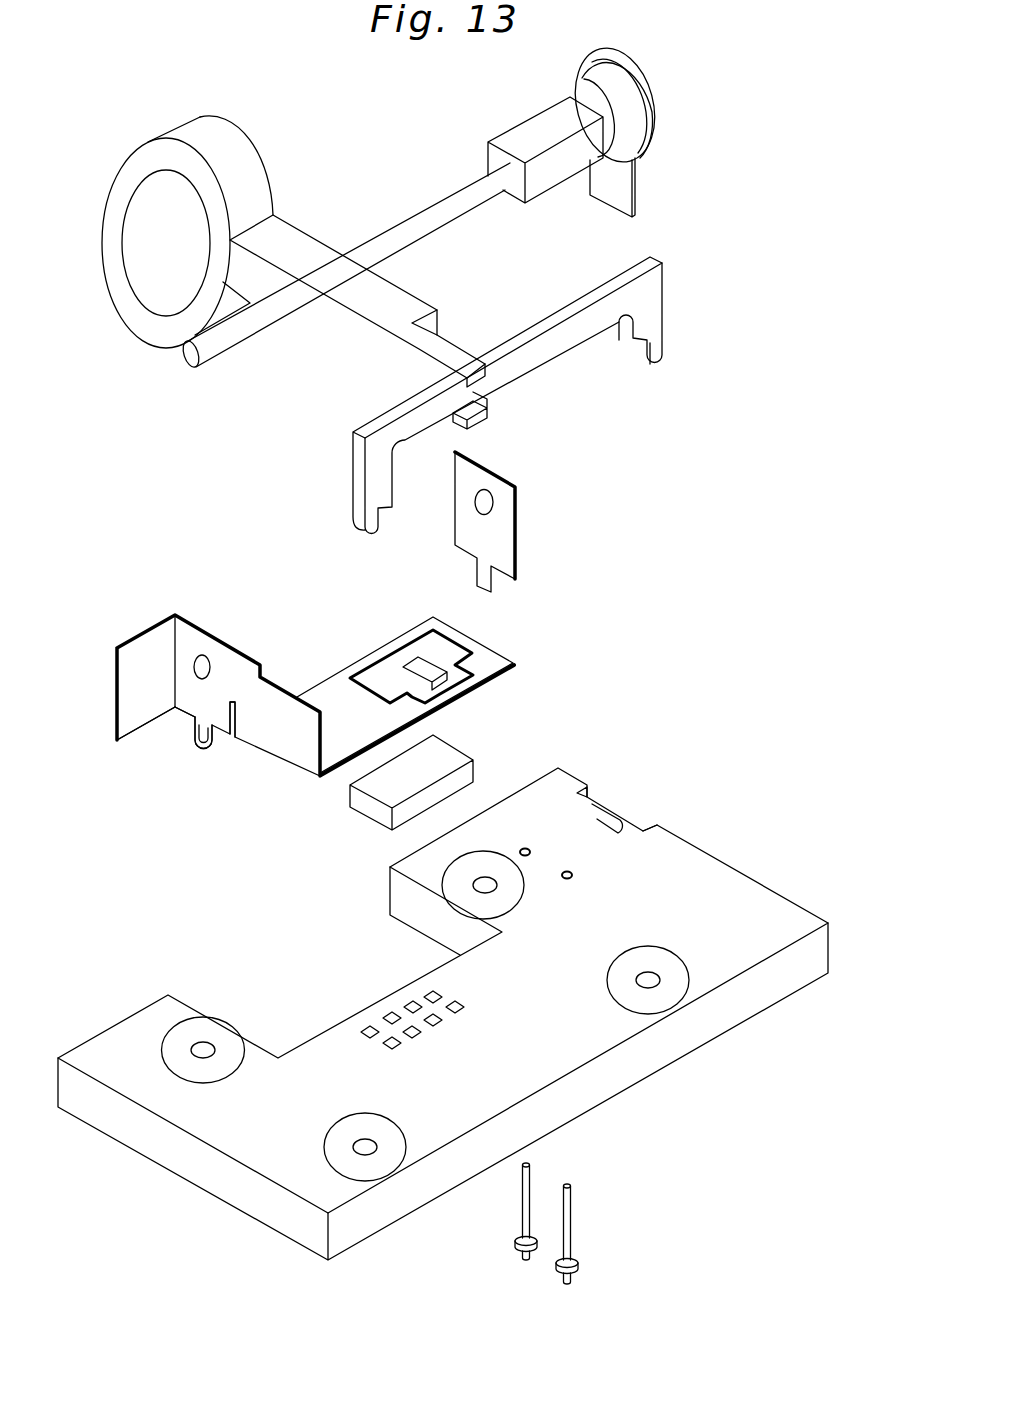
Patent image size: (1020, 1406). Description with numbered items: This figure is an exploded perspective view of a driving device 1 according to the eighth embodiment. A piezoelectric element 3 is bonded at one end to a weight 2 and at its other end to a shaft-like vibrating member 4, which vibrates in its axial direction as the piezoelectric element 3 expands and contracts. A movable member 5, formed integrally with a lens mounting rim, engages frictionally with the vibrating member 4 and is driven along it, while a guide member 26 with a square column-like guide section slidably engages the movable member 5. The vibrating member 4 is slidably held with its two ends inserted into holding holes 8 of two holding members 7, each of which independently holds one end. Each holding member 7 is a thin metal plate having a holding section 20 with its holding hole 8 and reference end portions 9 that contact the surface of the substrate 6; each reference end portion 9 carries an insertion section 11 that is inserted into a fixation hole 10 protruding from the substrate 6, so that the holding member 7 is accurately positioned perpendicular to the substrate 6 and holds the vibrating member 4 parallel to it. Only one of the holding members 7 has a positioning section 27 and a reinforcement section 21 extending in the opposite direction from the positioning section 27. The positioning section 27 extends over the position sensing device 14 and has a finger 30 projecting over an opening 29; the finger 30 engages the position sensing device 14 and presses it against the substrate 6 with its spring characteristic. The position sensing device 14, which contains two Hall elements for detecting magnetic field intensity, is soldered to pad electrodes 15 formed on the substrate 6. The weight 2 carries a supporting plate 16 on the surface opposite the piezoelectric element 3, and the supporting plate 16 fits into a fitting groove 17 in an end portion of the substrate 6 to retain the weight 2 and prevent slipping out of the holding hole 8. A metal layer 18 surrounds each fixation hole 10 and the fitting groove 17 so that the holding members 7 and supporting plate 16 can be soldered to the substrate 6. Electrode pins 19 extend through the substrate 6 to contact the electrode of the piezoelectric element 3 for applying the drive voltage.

The driving device 1 is at (343, 137).
The weight 2 is at (620, 122).
The piezoelectric element 3 is at (520, 137).
The vibrating member 4 is at (427, 212).
The movable member 5 is at (310, 262).
The substrate 6 is at (712, 882).
The holding member 7 is at (235, 631).
The holding hole 8 is at (197, 655).
The reference end portion 9 is at (225, 738).
The fixation hole 10 is at (490, 880).
The insertion section 11 is at (200, 746).
The position sensing device 14 is at (385, 828).
The pad electrode 15 is at (418, 999).
The supporting plate 16 is at (627, 195).
The fitting groove 17 is at (643, 830).
The metal layer 18 is at (610, 818).
The electrode pin 19 is at (520, 1217).
The holding section 20 is at (199, 703).
The reinforcement section 21 is at (137, 684).
The guide member 26 is at (540, 355).
The positioning section 27 is at (328, 700).
The opening 29 is at (402, 648).
The finger 30 is at (427, 668).